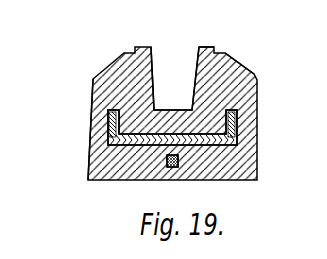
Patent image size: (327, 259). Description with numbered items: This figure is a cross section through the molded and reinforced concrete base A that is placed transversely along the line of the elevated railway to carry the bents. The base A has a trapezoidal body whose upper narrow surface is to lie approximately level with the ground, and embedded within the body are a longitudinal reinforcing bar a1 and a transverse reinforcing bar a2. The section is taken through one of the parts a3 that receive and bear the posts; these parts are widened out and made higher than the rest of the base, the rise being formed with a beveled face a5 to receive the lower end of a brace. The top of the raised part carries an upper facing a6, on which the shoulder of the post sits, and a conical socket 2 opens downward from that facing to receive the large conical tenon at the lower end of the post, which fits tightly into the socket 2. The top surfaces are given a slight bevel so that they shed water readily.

The concrete base A is at (257, 128).
The conical socket 2 is at (175, 78).
The longitudinal reinforcing bar a1 is at (166, 160).
The transverse reinforcing bar a2 is at (110, 136).
The post-bearing part a3 is at (93, 98).
The beveled face a5 is at (242, 64).
The upper facing a6 is at (208, 47).